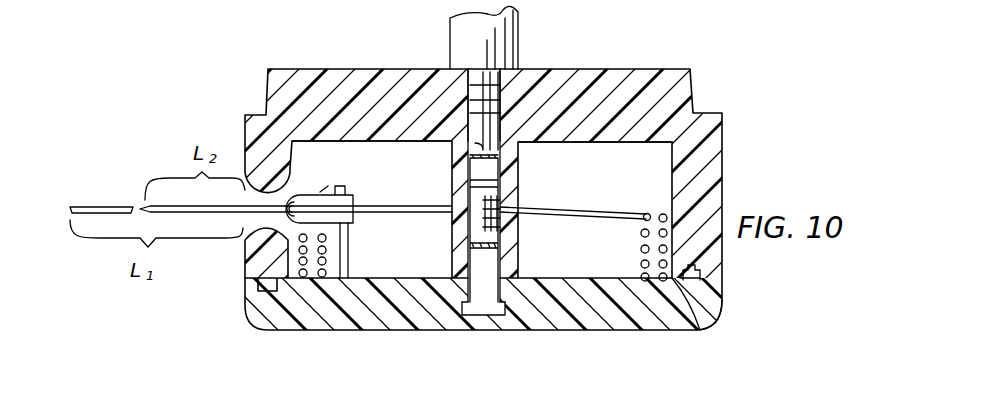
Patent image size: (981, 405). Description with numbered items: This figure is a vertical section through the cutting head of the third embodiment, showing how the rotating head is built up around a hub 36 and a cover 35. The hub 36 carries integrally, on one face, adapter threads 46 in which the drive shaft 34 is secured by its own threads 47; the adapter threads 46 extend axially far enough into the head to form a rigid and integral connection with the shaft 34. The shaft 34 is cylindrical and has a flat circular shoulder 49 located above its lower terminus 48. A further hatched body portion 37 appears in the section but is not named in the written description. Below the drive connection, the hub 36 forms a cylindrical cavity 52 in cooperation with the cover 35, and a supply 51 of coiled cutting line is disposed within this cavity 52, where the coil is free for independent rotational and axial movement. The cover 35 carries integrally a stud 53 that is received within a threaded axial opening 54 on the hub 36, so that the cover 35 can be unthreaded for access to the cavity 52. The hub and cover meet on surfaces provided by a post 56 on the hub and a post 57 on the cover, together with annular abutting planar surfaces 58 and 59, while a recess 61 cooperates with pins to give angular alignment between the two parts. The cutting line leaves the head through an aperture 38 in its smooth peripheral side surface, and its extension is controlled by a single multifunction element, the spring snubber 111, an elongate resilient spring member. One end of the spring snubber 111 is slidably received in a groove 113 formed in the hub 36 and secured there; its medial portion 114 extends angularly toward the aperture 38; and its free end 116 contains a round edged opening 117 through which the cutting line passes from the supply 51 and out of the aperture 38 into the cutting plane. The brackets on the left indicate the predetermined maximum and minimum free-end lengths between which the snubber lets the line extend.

The drive shaft 34 is at (518, 36).
The cover 35 is at (717, 300).
The hub 36 is at (722, 133).
The top plate 37 is at (677, 82).
The aperture 38 is at (258, 214).
The adapter threads 46 is at (500, 116).
The threads 47 is at (477, 78).
The lower terminus 48 is at (456, 143).
The flat circular shoulder 49 is at (497, 118).
The supply of coiled cutting line 51 is at (640, 252).
The cylindrical cavity 52 is at (597, 170).
The stud 53 is at (483, 306).
The threaded axial opening 54 is at (512, 205).
The post 56 is at (518, 155).
The post 57 is at (516, 258).
The annular abutting planar surface 58 is at (690, 331).
The annular abutting planar surface 59 is at (712, 276).
The recess 61 is at (688, 268).
The spring snubber 111 is at (325, 183).
The groove 113 is at (349, 249).
The medial portion 114 is at (347, 198).
The free end 116 is at (253, 205).
The round edged opening 117 is at (288, 206).